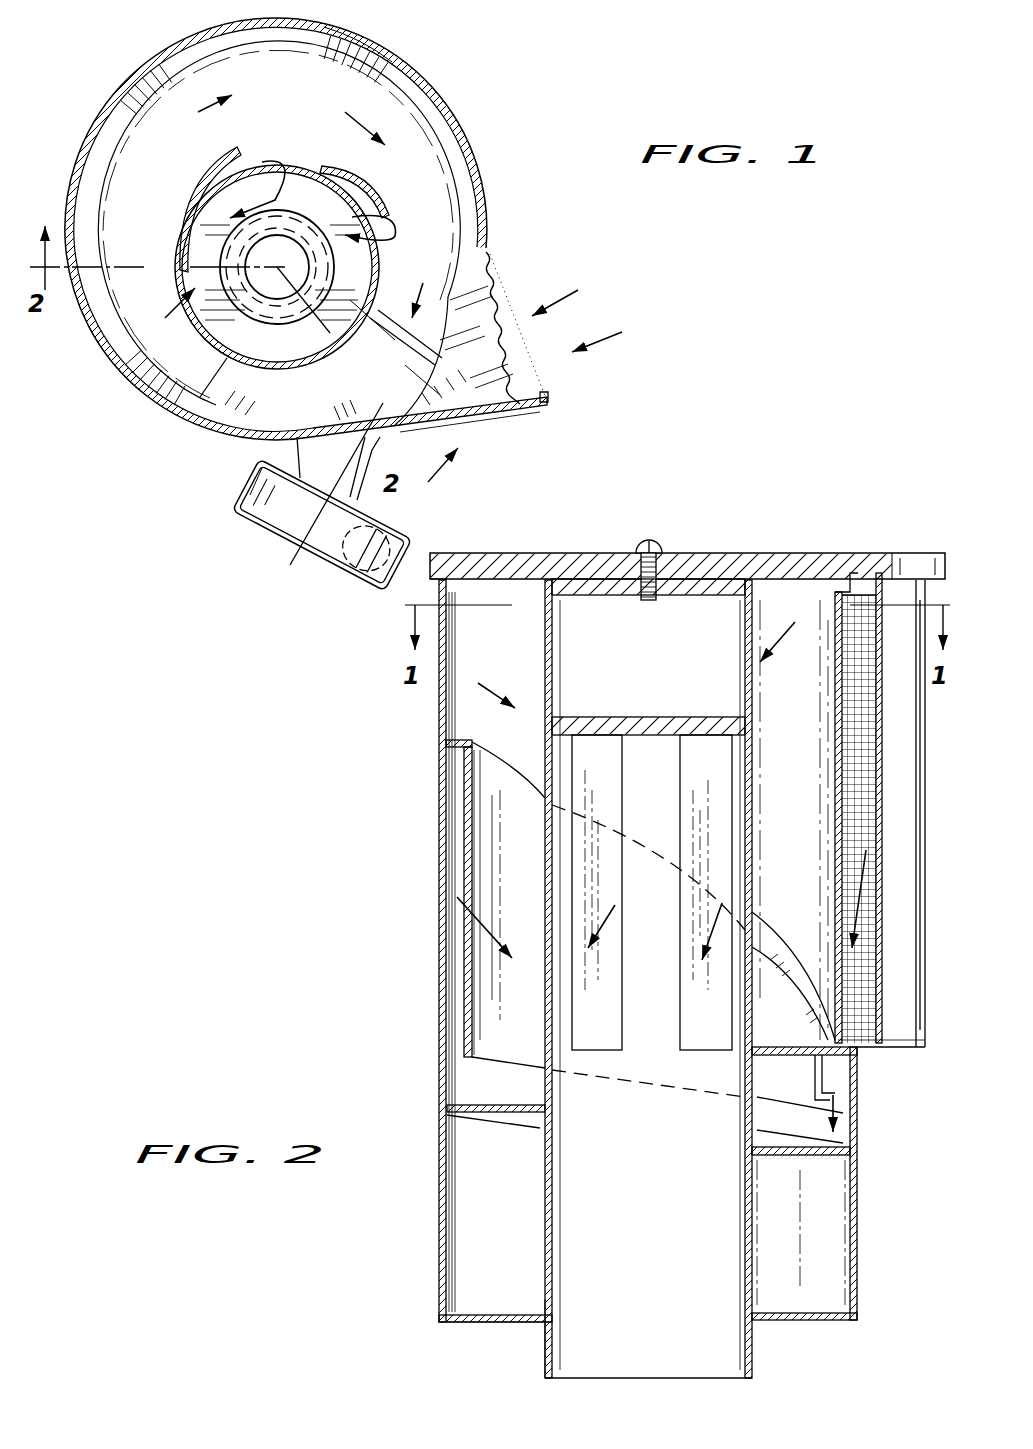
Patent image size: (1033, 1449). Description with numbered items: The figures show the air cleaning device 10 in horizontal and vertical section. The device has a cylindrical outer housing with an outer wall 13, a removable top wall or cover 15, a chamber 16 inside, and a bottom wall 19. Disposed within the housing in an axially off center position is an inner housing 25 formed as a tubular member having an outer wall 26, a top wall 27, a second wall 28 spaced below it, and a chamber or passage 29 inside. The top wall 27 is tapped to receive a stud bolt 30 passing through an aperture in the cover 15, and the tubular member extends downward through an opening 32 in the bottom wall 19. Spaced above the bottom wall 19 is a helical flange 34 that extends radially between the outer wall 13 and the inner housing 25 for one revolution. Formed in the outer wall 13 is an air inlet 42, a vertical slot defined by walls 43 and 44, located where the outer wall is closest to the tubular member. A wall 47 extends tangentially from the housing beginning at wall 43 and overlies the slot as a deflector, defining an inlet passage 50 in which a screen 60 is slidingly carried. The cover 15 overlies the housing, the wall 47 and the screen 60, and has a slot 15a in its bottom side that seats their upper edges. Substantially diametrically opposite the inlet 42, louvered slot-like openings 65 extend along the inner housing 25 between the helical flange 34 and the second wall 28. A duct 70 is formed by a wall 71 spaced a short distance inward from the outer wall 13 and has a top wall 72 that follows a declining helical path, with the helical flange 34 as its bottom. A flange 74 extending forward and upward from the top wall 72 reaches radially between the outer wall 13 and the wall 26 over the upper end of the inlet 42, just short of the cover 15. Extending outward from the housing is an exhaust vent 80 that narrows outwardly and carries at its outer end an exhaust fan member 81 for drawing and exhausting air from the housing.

In FIG. 2, the air cleaning device 10 is at (767, 547).
In FIG. 1, the outer wall 13 is at (462, 133).
In FIG. 2, the outer wall 13 is at (440, 742).
In FIG. 2, the top wall or cover 15 is at (553, 553).
In FIG. 2, the slot 15a is at (447, 575).
In FIG. 2, the chamber 16 is at (827, 808).
In FIG. 2, the bottom wall 19 is at (500, 1322).
In FIG. 2, the inner housing 25 is at (781, 628).
In FIG. 1, the outer wall 26 is at (284, 165).
In FIG. 2, the outer wall 26 is at (752, 790).
In FIG. 2, the top wall 27 is at (622, 598).
In FIG. 2, the second wall 28 is at (712, 717).
In FIG. 2, the chamber or passage 29 is at (683, 1232).
In FIG. 2, the stud bolt 30 is at (662, 546).
In FIG. 2, the opening 32 is at (552, 1312).
In FIG. 2, the helical flange 34 is at (462, 1106).
In FIG. 1, the air inlet 42 is at (408, 385).
In FIG. 1, the wall 43 is at (315, 440).
In FIG. 1, the wall 44 is at (436, 366).
In FIG. 1, the wall 47 is at (486, 422).
In FIG. 1, the inlet passage 50 is at (510, 400).
In FIG. 1, the screen 60 is at (512, 297).
In FIG. 1, the slot-like openings 65 is at (223, 177).
In FIG. 2, the slot-like openings 65 is at (600, 1050).
In FIG. 2, the duct 70 is at (452, 816).
In FIG. 2, the wall 71 is at (467, 895).
In FIG. 1, the top wall 72 is at (385, 68).
In FIG. 2, the top wall 72 is at (777, 950).
In FIG. 1, the flange 74 is at (225, 410).
In FIG. 1, the exhaust vent 80 is at (321, 501).
In FIG. 1, the exhaust fan member 81 is at (270, 537).